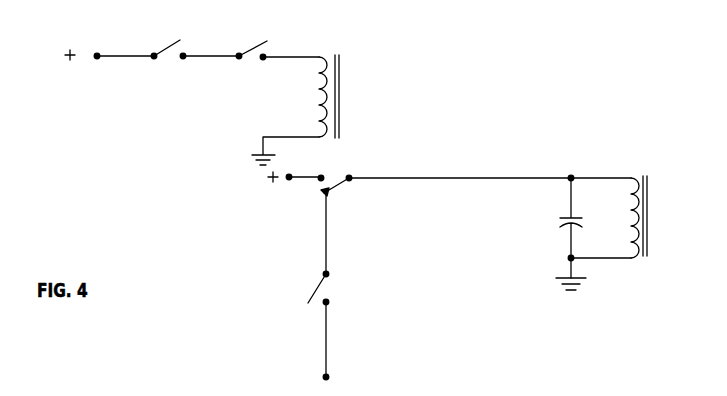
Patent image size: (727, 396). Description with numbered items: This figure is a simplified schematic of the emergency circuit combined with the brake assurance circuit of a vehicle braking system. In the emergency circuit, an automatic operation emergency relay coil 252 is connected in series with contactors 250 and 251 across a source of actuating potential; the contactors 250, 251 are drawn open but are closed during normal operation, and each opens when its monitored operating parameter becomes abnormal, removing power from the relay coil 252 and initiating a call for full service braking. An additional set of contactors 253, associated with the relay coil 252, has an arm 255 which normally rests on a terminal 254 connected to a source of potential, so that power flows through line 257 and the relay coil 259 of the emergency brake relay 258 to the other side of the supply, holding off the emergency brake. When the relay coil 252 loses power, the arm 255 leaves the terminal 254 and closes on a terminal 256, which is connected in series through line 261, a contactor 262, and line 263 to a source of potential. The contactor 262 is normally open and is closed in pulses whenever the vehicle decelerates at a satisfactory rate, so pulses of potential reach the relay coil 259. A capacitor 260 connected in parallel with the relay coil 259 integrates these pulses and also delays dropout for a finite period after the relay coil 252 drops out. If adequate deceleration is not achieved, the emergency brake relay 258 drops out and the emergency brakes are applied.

The contactor 250 is at (165, 59).
The contactor 251 is at (252, 45).
The automatic operation emergency relay coil 252 is at (318, 97).
The additional set of contactors 253 is at (359, 191).
The terminal 254 is at (315, 181).
The arm 255 is at (338, 172).
The terminal 256 is at (330, 195).
The line 257 is at (470, 178).
The emergency brake relay 258 is at (617, 200).
The relay coil 259 is at (628, 210).
The capacitor 260 is at (563, 223).
The line 261 is at (325, 235).
The contactor 262 is at (320, 282).
The line 263 is at (326, 320).